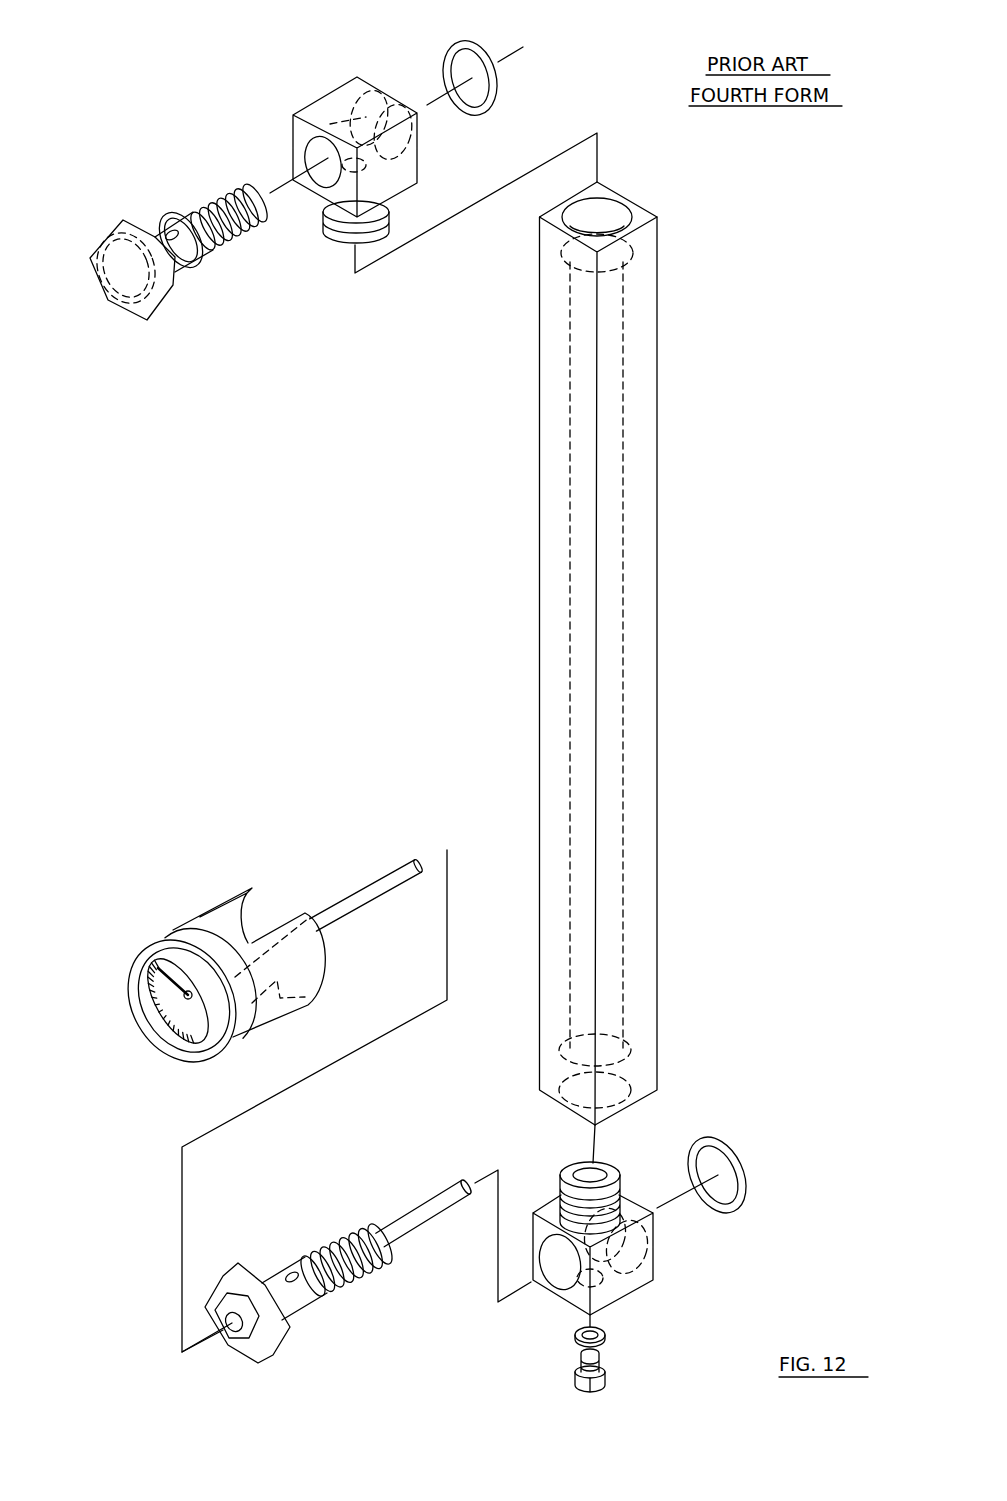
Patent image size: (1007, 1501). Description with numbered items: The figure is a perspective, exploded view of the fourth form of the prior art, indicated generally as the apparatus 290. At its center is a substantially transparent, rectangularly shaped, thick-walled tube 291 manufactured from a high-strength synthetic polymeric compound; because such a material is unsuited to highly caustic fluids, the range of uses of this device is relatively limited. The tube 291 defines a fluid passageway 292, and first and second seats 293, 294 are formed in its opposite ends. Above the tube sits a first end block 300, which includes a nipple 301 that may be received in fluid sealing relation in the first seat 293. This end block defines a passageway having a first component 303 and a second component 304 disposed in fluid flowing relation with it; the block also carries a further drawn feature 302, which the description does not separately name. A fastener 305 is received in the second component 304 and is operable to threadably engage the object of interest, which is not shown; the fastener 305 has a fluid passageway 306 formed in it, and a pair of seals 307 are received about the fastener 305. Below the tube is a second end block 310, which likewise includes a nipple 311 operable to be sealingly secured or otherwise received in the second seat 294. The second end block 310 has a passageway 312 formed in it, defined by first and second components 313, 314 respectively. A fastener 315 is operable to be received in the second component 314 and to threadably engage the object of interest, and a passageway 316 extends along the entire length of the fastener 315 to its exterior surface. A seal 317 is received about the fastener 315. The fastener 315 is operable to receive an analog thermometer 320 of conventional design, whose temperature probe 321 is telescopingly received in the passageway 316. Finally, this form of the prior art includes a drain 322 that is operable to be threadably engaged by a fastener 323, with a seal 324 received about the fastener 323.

The fourth form of the prior art 290 is at (533, 607).
The tube 291 is at (640, 797).
The fluid passageway 292 is at (610, 650).
The first seat 293 is at (617, 217).
The second seat 294 is at (615, 1084).
The first end block 300 is at (345, 85).
The nipple 301 is at (383, 222).
The bore in upper block 302 is at (366, 103).
The first component 303 is at (320, 202).
The second component 304 is at (337, 127).
The fastener 305 is at (180, 257).
The fluid passageway 306 is at (168, 222).
The seals 307 is at (497, 90).
The second end block 310 is at (640, 1273).
The nipple 311 is at (605, 1178).
The passageway 312 is at (563, 1262).
The first component 313 is at (593, 1173).
The second component 314 is at (637, 1237).
The fastener 315 is at (313, 1290).
The passageway 316 is at (297, 1265).
The seal 317 is at (722, 1171).
The analog thermometer 320 is at (142, 1042).
The temperature probe 321 is at (373, 890).
The drain 322 is at (618, 1297).
The fastener 323 is at (600, 1364).
The seal 324 is at (583, 1345).